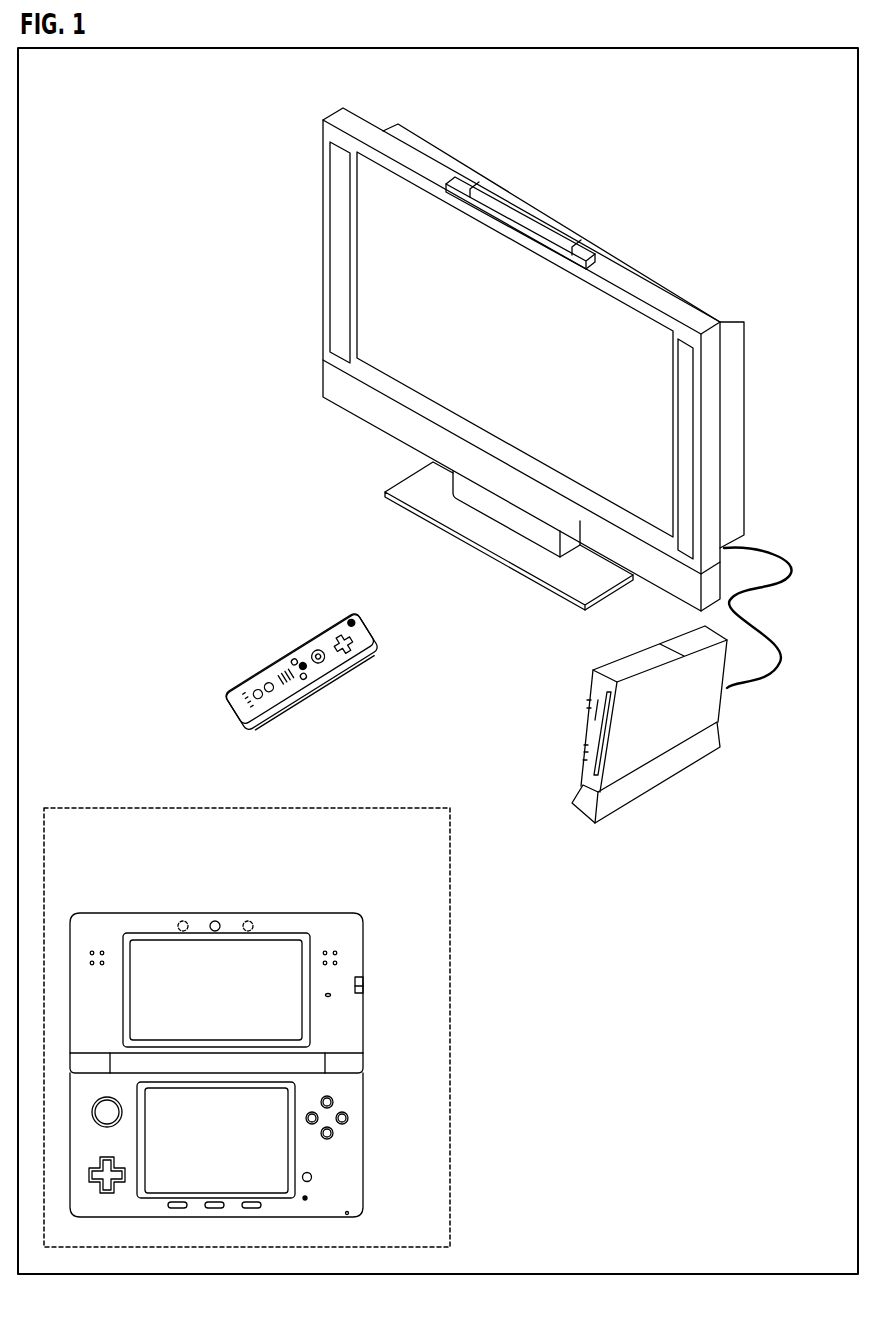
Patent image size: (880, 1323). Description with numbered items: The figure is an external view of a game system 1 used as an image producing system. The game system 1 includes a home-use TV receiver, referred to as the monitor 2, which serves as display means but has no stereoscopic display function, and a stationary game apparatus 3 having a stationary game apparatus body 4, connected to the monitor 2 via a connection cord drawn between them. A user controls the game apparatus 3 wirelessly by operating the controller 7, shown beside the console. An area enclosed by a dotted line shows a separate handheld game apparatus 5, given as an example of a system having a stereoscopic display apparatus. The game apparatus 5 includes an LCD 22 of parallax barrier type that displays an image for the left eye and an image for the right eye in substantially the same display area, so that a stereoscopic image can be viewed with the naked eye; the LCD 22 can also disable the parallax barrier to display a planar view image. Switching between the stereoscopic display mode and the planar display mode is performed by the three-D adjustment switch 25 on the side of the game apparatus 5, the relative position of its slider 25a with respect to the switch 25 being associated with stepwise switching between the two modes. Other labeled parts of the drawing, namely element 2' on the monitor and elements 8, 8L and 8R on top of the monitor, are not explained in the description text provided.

The game system 1 is at (272, 148).
The monitor 2 is at (538, 396).
The frame of television 2' is at (322, 283).
The game apparatus 3 is at (611, 851).
The stationary game apparatus body 4 is at (720, 717).
The game apparatus 5 is at (383, 895).
The controller 7 is at (365, 597).
The marker device 8 is at (503, 202).
The left marker 8L is at (463, 190).
The right marker 8R is at (578, 257).
The LCD 22 is at (153, 940).
The 3D adjustment switch 25 is at (365, 982).
The slider 25a is at (365, 992).